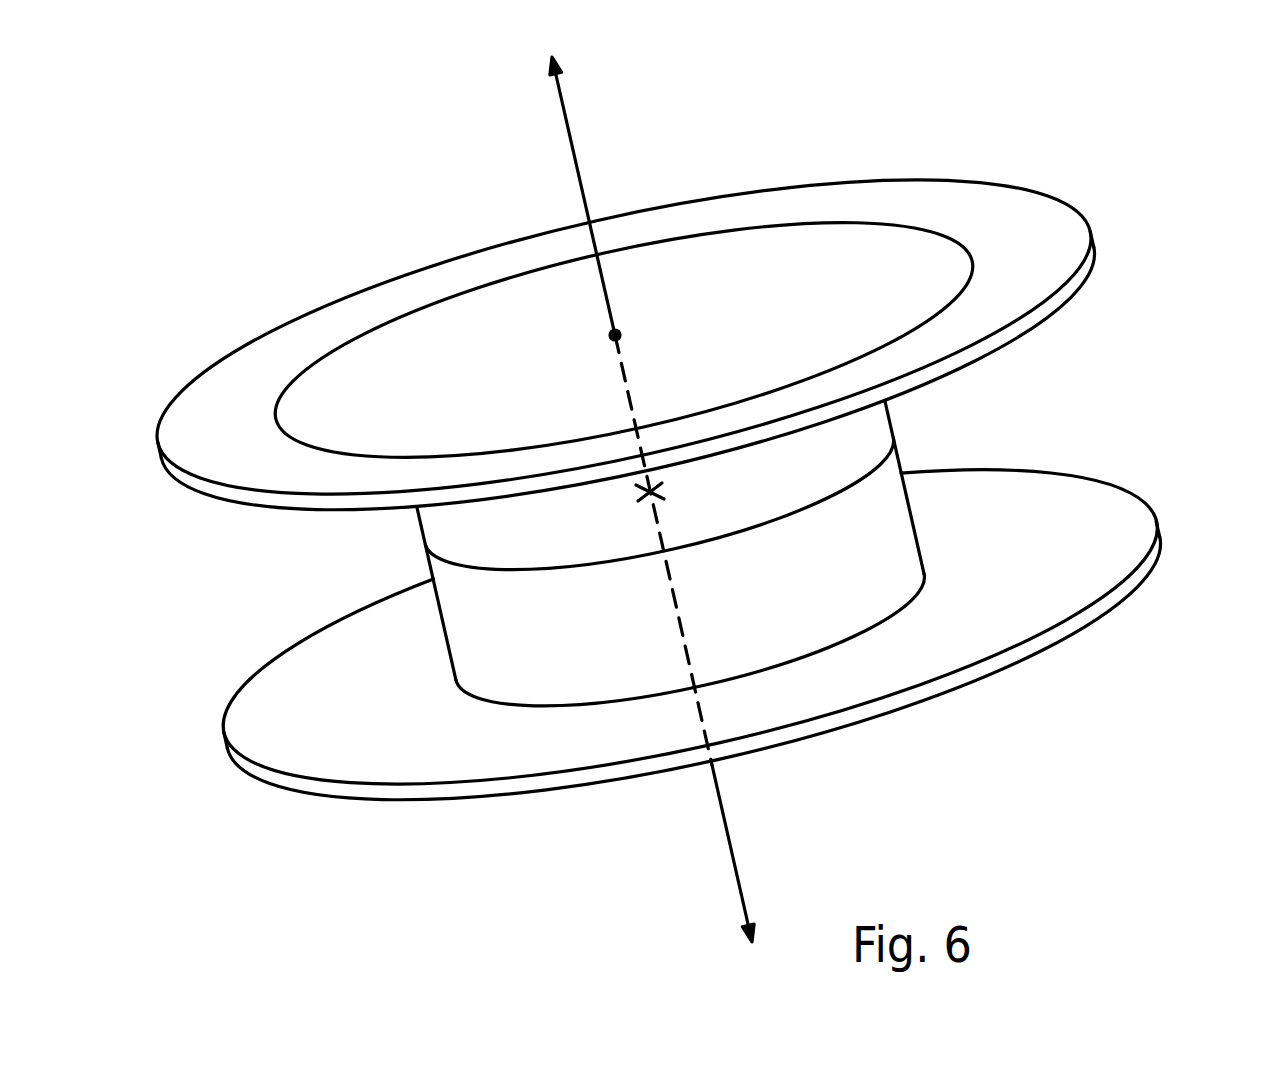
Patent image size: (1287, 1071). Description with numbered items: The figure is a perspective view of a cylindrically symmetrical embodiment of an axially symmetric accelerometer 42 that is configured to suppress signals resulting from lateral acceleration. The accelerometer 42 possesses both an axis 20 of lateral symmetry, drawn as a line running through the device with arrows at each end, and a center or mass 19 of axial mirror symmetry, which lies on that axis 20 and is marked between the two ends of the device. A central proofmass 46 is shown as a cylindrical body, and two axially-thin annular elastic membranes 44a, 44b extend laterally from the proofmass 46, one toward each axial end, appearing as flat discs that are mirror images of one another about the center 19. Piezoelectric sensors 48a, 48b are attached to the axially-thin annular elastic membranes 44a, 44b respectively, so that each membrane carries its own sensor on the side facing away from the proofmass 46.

The axially symmetric accelerometer 42 is at (360, 162).
The axially-thin annular elastic membrane 44a is at (1082, 215).
The axially-thin annular elastic membrane 44b is at (1120, 592).
The proofmass 46 is at (477, 572).
The piezoelectric sensor 48a is at (923, 205).
The piezoelectric sensor 48b is at (895, 730).
The axis of lateral symmetry 20 is at (570, 127).
The center of axial mirror symmetry 19 is at (656, 491).